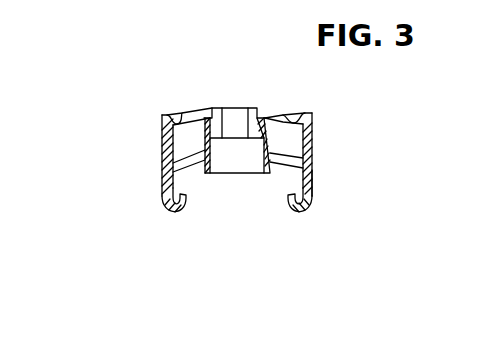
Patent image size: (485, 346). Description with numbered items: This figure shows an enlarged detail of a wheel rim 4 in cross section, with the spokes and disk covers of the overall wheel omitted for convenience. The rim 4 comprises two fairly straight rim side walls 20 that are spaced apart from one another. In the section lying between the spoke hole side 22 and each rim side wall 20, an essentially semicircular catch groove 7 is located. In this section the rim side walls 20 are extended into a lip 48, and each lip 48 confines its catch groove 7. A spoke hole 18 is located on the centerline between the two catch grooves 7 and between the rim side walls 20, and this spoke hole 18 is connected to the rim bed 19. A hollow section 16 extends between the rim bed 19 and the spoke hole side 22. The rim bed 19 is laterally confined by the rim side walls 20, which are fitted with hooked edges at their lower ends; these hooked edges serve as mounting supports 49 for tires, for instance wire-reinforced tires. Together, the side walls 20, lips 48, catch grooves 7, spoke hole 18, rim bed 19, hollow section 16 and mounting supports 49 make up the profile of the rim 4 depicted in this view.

The rim 4 is at (338, 142).
The catch groove 7 is at (175, 106).
The hollow section 16 is at (313, 185).
The spoke hole 18 is at (232, 108).
The rim bed 19 is at (235, 192).
The rim side walls 20 is at (162, 177).
The spoke hole side 22 is at (248, 106).
The lip 48 is at (162, 115).
The mounting supports 49 is at (196, 185).